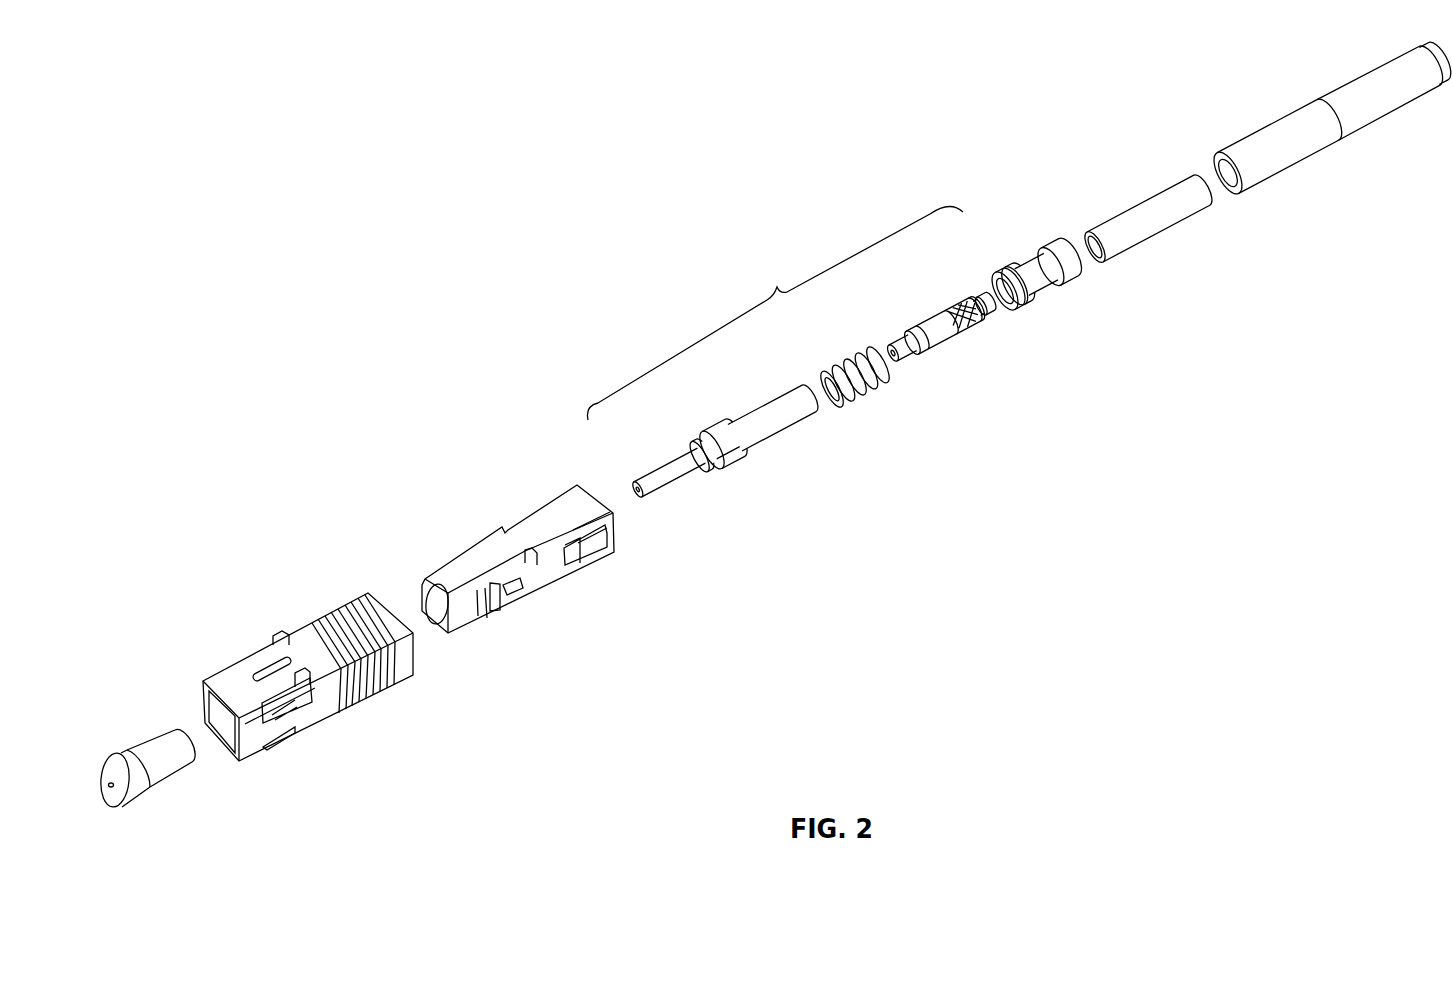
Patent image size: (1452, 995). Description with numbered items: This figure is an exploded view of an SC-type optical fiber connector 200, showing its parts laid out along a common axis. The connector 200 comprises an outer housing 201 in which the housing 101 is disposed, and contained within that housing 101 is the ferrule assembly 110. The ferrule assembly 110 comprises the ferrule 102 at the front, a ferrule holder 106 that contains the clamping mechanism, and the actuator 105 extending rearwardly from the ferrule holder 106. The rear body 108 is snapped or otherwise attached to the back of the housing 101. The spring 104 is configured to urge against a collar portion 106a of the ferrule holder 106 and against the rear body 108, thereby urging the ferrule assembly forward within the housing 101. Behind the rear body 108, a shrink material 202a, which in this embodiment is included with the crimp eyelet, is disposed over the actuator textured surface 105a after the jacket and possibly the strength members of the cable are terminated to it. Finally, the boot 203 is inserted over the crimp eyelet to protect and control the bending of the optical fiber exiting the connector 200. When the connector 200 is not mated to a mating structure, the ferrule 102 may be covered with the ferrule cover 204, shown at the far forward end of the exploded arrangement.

The connector 200 is at (324, 336).
The housing 101 is at (543, 576).
The ferrule 102 is at (670, 480).
The spring 104 is at (868, 385).
The actuator 105 is at (945, 327).
The actuator textured surface 105a is at (966, 325).
The ferrule holder 106 is at (726, 461).
The collar portion 106a is at (719, 434).
The rear body 108 is at (1050, 282).
The ferrule assembly 110 is at (775, 313).
The outer housing 201 is at (323, 713).
The shrink material 202a is at (1155, 235).
The boot 203 is at (1287, 170).
The ferrule cover 204 is at (162, 782).